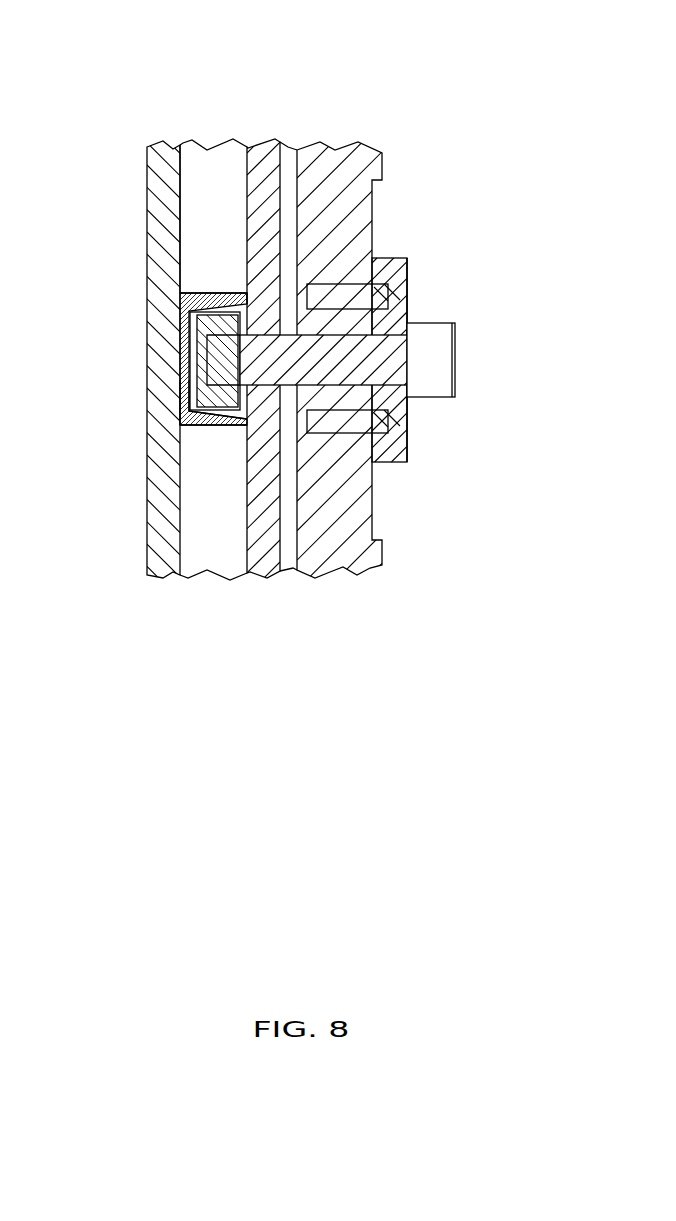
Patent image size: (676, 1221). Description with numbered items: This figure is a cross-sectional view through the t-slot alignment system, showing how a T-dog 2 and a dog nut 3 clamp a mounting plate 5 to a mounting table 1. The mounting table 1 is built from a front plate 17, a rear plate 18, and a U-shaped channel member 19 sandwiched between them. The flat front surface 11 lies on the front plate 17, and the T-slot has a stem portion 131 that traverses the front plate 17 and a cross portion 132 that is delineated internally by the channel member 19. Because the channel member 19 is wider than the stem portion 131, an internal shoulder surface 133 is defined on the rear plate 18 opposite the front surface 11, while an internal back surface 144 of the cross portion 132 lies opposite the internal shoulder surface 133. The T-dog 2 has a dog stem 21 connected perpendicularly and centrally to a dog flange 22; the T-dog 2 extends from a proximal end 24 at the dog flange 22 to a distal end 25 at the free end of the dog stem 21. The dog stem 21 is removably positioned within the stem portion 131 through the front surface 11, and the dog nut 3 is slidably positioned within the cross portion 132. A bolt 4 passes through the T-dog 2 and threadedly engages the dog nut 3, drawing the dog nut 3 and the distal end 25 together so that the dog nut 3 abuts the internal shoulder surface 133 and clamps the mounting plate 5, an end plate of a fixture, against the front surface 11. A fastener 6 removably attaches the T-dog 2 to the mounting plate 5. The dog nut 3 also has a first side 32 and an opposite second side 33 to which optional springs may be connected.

The mounting table 1 is at (175, 100).
The T-dog 2 is at (419, 338).
The dog nut 3 is at (184, 311).
The bolt 4 is at (444, 353).
The mounting plate 5 is at (357, 193).
The fastener 6 is at (342, 287).
The front surface 11 is at (293, 569).
The front plate 17 is at (262, 165).
The rear plate 18 is at (156, 182).
The channel member 19 is at (244, 298).
The dog stem 21 is at (339, 373).
The dog flange 22 is at (380, 260).
The proximal end 24 is at (412, 286).
The distal end 25 is at (237, 367).
The first side 32 is at (186, 412).
The second side 33 is at (186, 392).
The stem portion 131 is at (212, 293).
The cross portion 132 is at (256, 330).
The internal shoulder surface 133 is at (242, 426).
The internal back surface 144 is at (195, 430).